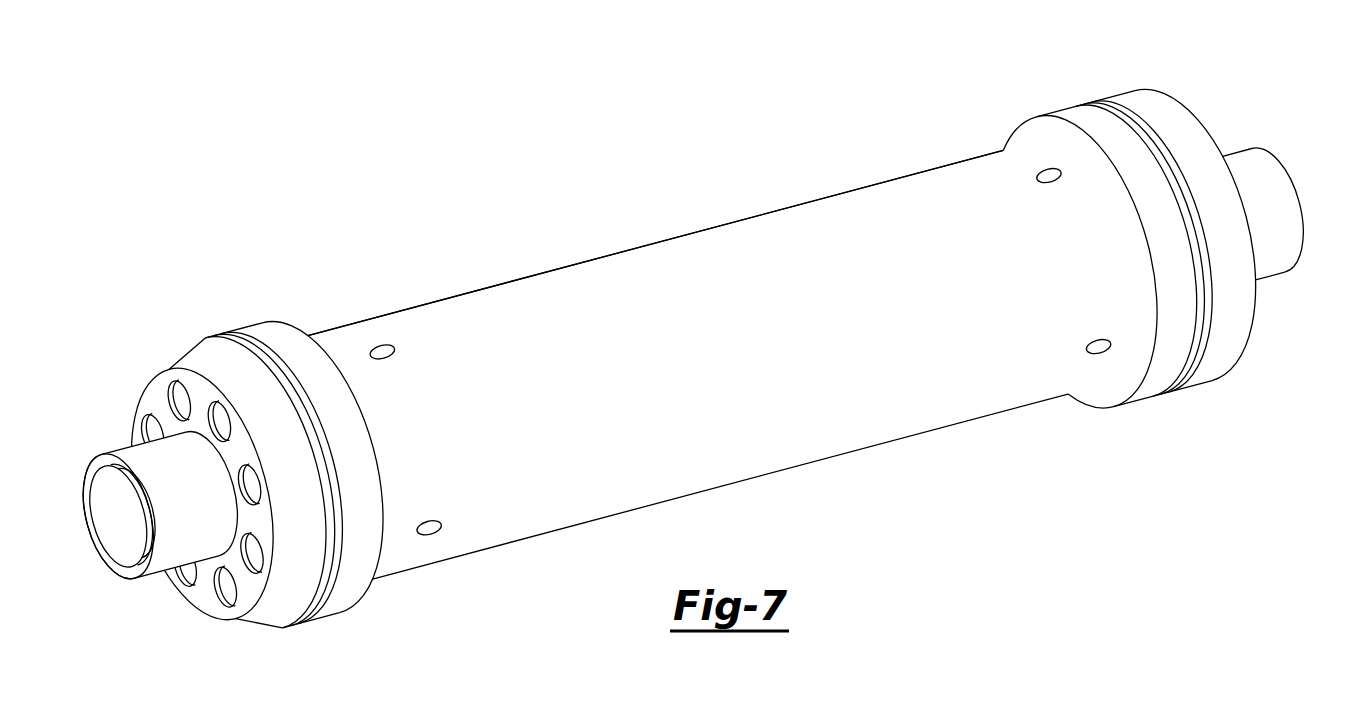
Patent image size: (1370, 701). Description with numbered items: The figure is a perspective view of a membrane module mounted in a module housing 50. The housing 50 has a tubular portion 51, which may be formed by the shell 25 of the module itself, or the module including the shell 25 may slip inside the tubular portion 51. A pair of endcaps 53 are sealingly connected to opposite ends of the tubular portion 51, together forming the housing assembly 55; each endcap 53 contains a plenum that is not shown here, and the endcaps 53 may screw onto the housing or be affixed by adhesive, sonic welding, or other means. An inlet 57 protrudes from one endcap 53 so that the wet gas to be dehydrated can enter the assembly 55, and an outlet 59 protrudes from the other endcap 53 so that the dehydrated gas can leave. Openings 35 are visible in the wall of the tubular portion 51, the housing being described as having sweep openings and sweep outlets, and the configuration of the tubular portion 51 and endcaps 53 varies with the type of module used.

The shell 25 is at (580, 327).
The openings 35 is at (1046, 182).
The module housing 50 is at (453, 256).
The tubular portion 51 is at (831, 195).
The endcaps 53 is at (207, 370).
The housing assembly 55 is at (338, 123).
The inlet 57 is at (127, 458).
The outlet 59 is at (1290, 171).